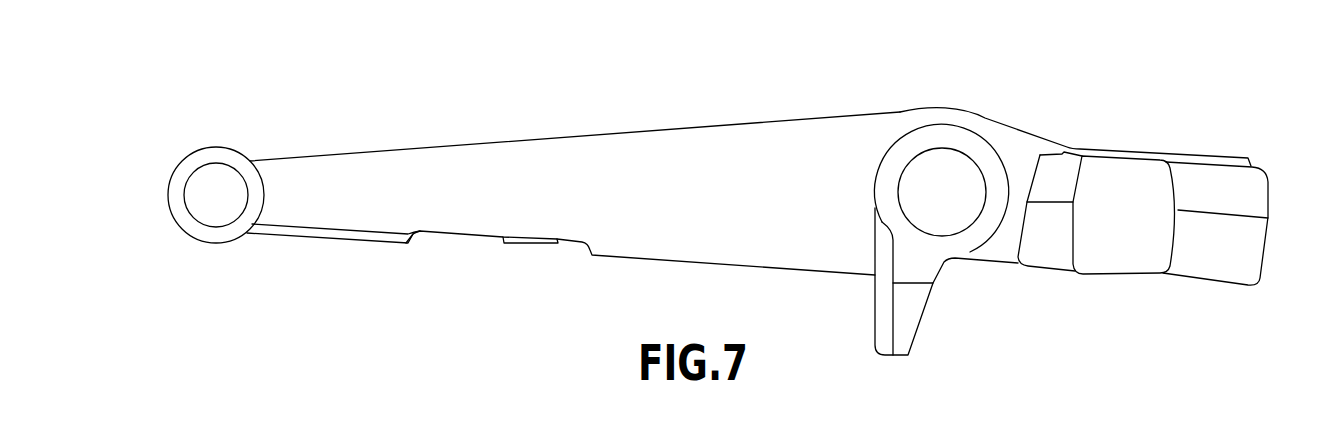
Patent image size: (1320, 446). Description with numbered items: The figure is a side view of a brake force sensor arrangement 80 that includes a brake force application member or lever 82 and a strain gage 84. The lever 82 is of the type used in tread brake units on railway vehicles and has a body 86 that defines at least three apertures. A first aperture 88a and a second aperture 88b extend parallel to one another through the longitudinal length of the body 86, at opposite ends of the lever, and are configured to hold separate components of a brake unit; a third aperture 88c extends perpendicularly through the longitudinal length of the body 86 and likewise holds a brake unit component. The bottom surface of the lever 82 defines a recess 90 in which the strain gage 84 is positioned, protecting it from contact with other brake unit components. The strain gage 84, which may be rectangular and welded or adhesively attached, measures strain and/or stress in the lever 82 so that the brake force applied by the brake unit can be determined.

The brake force sensor arrangement 80 is at (578, 53).
The lever 82 is at (995, 103).
The strain gage 84 is at (523, 240).
The body 86 is at (495, 162).
The first aperture 88a is at (212, 180).
The second aperture 88b is at (925, 173).
The third aperture 88c is at (1180, 152).
The recess 90 is at (460, 235).